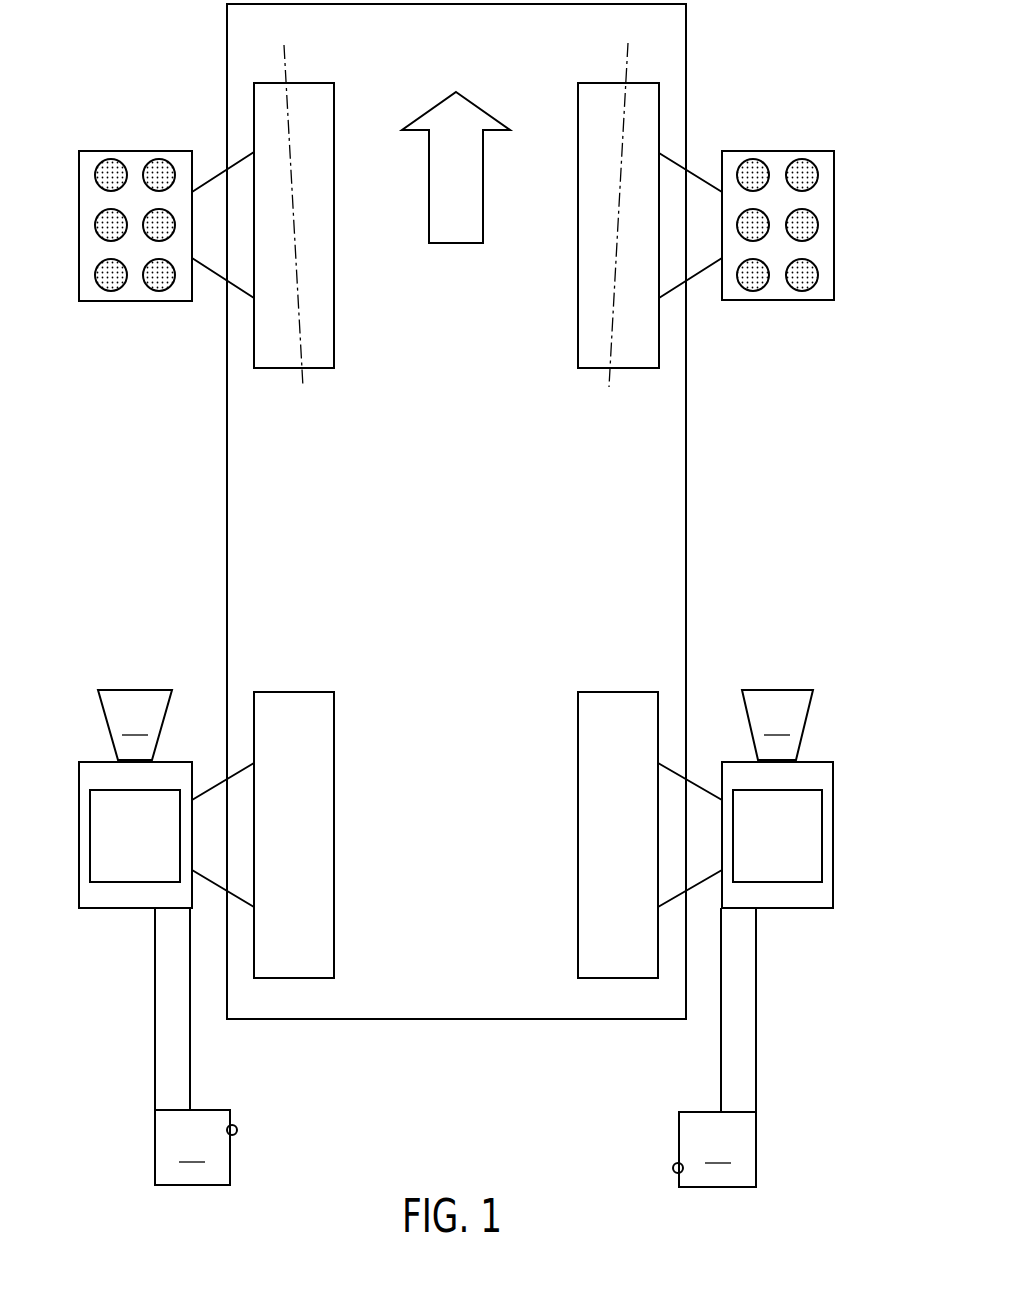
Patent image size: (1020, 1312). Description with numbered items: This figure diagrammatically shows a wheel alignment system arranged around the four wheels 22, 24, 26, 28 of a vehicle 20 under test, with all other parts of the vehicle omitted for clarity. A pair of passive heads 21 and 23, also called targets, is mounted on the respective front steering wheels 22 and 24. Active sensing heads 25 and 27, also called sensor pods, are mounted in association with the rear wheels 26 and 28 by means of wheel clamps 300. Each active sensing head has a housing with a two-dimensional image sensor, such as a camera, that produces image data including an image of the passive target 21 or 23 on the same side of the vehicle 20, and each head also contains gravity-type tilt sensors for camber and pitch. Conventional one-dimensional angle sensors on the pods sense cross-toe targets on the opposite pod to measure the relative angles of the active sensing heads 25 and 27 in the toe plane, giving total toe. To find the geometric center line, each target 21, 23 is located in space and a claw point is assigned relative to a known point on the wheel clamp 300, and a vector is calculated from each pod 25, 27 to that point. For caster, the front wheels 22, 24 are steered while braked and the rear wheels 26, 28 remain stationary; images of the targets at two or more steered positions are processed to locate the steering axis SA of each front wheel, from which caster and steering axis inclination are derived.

The vehicle 20 is at (226, 550).
The passive head 21 is at (149, 197).
The wheel 22 is at (303, 82).
The passive head 23 is at (763, 194).
The wheel 24 is at (610, 82).
The active sensing head 25 is at (163, 908).
The wheel 26 is at (295, 690).
The active sensing head 27 is at (747, 909).
The wheel 28 is at (617, 690).
The wheel clamp 300 is at (217, 785).
The steering axis SA is at (456, 233).